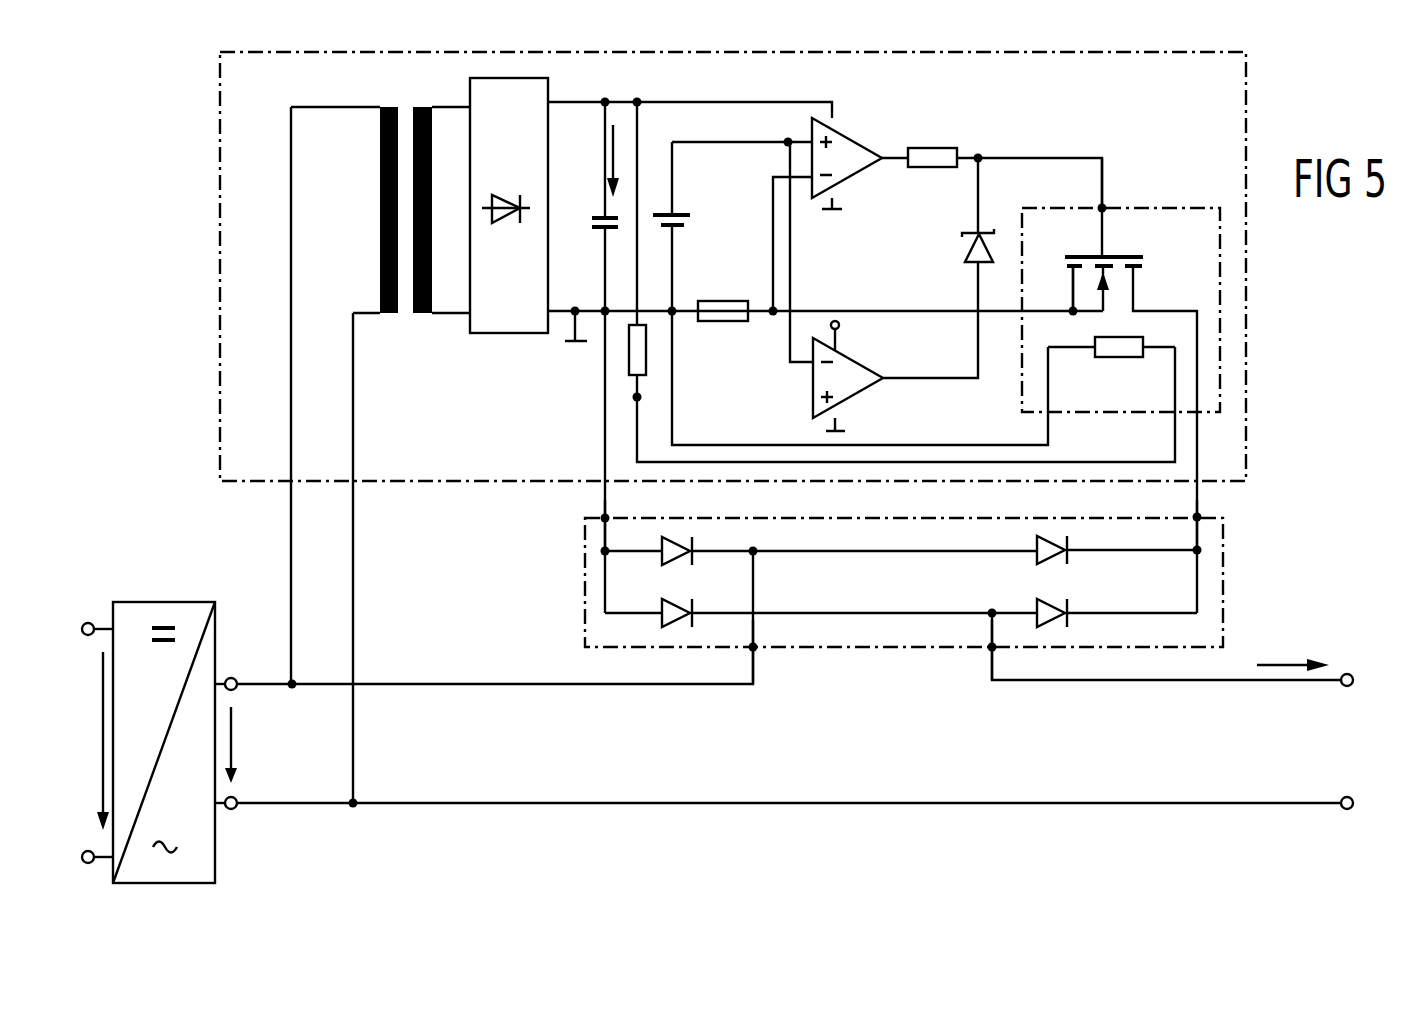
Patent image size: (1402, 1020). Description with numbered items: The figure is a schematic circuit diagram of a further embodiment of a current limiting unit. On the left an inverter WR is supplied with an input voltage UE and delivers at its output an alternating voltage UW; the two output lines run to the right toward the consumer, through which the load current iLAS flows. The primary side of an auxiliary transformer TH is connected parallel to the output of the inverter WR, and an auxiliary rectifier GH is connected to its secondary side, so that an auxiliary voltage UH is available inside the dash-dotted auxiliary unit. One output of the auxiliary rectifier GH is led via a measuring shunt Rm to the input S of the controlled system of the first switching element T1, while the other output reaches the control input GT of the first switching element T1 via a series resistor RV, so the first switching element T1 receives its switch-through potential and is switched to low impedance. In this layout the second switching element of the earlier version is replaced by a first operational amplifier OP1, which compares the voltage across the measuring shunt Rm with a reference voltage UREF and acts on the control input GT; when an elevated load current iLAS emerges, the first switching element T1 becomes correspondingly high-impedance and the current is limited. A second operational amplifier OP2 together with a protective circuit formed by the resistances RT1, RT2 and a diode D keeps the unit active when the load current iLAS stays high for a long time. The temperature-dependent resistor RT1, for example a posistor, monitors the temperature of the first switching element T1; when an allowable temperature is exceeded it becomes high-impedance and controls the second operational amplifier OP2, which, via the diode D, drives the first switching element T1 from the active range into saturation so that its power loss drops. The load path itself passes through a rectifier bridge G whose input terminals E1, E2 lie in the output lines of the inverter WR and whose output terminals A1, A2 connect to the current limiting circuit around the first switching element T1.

The auxiliary transformer TH is at (376, 218).
The auxiliary rectifier GH is at (508, 334).
The auxiliary voltage UH is at (605, 150).
The reference voltage UREF is at (688, 214).
The first operational amplifier OP1 is at (850, 179).
The series resistor RV is at (940, 148).
The diode D is at (965, 249).
The control input GT is at (1101, 207).
The first switching element T1 is at (1143, 257).
The input of the controlled system S is at (1064, 289).
The measuring shunt Rm is at (720, 322).
The resistance RT2 is at (629, 348).
The second operational amplifier OP2 is at (856, 398).
The temperature-dependent resistor RT1 is at (1118, 357).
The rectifier bridge G is at (904, 582).
The first output terminal A1 is at (604, 519).
The second output terminal A2 is at (1200, 519).
The first input terminal E1 is at (756, 650).
The second input terminal E2 is at (991, 649).
The load current iLAS is at (1289, 660).
The inverter WR is at (180, 883).
The input voltage UE is at (103, 705).
The alternating voltage UW is at (233, 742).